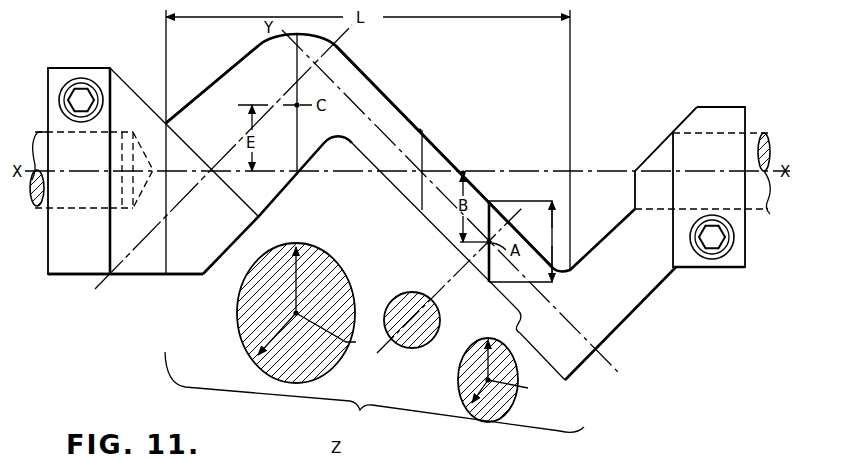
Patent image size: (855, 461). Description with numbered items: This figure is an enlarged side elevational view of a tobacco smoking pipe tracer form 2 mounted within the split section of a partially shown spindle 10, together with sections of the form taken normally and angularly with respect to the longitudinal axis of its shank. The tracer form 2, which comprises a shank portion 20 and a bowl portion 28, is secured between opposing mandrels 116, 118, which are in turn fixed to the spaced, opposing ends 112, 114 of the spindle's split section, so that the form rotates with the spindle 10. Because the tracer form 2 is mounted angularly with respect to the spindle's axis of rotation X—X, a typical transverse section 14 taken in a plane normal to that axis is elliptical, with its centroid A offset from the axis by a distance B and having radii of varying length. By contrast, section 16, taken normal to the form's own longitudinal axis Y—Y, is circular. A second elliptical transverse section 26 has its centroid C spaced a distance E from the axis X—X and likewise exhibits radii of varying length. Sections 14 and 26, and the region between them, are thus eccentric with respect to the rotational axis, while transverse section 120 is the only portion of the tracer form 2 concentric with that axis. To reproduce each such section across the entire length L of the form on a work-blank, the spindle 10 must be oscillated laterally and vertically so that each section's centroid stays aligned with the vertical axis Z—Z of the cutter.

The tracer form 2 is at (372, 67).
The spindle 10 is at (45, 126).
The transverse section 14 is at (494, 207).
The section 16 is at (394, 302).
The shank portion 20 is at (433, 155).
The elliptical transverse section 26 is at (299, 133).
The bowl portion 28 is at (241, 70).
The end of split section 112 is at (760, 200).
The end of split section 114 is at (44, 205).
The mandrel 116 is at (683, 260).
The mandrel 118 is at (152, 260).
The transverse section 120 is at (415, 136).